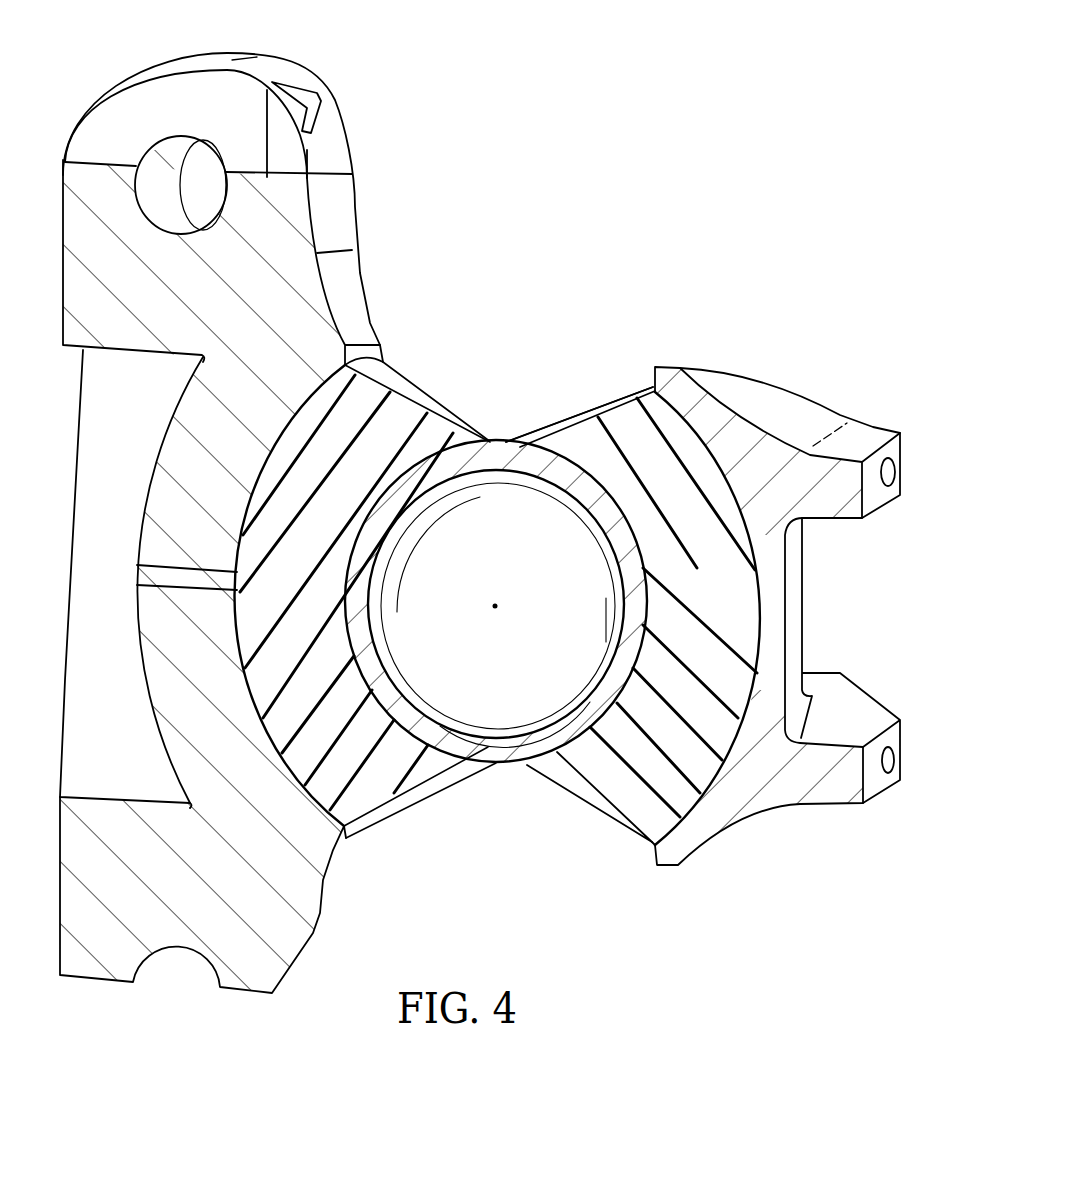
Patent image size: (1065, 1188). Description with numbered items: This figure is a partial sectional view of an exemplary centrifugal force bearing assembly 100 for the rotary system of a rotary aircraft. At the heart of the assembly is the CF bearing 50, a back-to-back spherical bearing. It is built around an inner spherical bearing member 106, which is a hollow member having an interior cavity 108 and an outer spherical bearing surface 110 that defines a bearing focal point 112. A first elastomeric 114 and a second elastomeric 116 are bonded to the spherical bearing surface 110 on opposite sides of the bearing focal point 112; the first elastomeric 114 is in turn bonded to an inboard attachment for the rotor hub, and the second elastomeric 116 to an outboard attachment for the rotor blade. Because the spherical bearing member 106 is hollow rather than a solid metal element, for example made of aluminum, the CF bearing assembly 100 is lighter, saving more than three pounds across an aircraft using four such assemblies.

The centrifugal force bearing assembly 100 is at (477, 511).
The CF bearing 50 is at (567, 565).
The inner spherical bearing member 106 is at (505, 432).
The interior cavity 108 is at (507, 680).
The spherical bearing surface 110 is at (653, 605).
The bearing focal point 112 is at (495, 600).
The first elastomeric 114 is at (376, 795).
The second elastomeric 116 is at (630, 418).